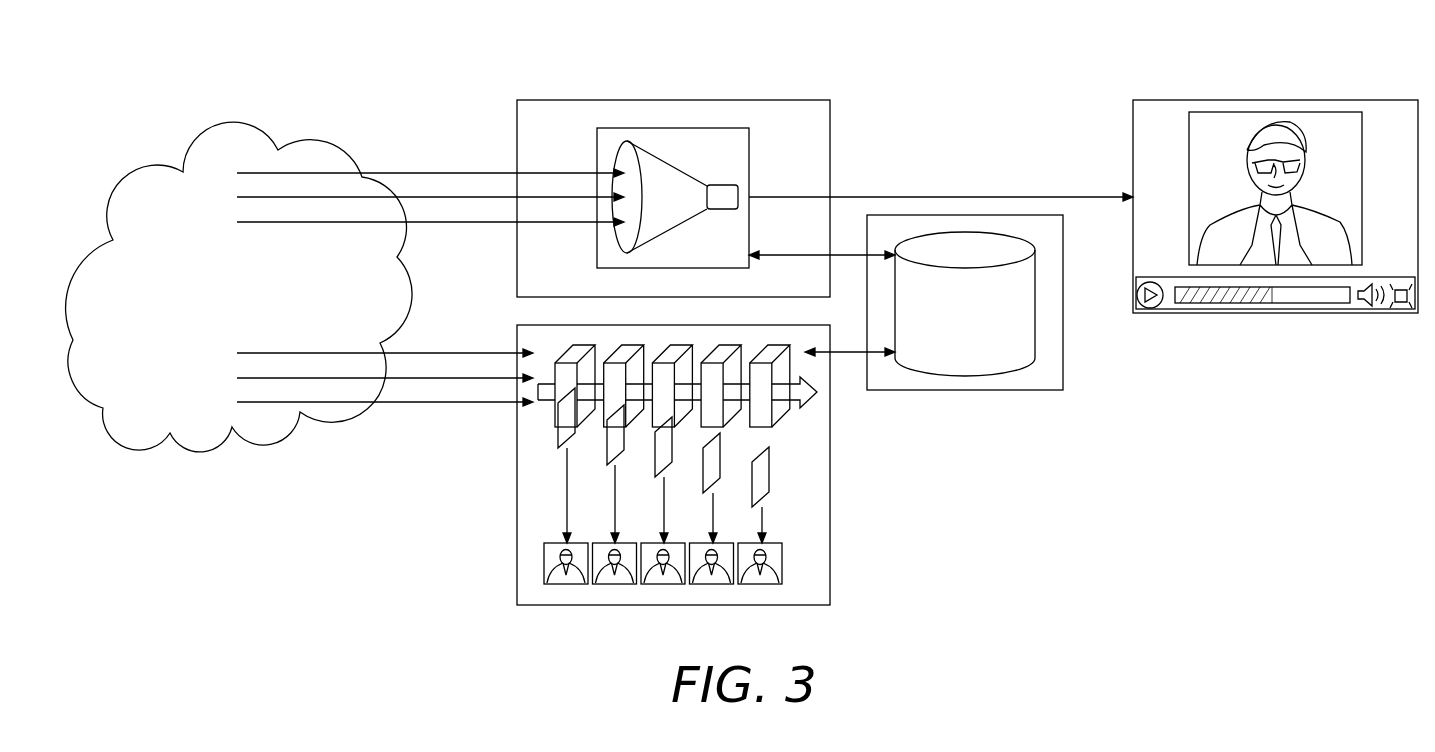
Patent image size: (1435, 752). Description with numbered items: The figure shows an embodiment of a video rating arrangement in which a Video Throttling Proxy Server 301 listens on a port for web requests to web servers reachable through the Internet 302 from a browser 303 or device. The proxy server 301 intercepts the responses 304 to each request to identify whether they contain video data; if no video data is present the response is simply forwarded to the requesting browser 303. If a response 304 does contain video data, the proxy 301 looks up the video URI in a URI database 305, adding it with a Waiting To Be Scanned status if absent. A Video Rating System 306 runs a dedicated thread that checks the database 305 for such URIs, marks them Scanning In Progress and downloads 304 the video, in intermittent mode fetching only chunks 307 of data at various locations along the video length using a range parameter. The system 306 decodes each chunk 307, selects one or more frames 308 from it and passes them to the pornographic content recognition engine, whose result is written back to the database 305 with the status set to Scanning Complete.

The Video Throttling (VT) Proxy Server 301 is at (625, 128).
The Internet 302 is at (232, 121).
The browser 303 is at (1160, 100).
The responses 304 is at (452, 196).
The URI database 305 is at (965, 373).
The Video Rating (VR) System 306 is at (830, 590).
The chunks 307 is at (612, 404).
The frames 308 is at (570, 585).